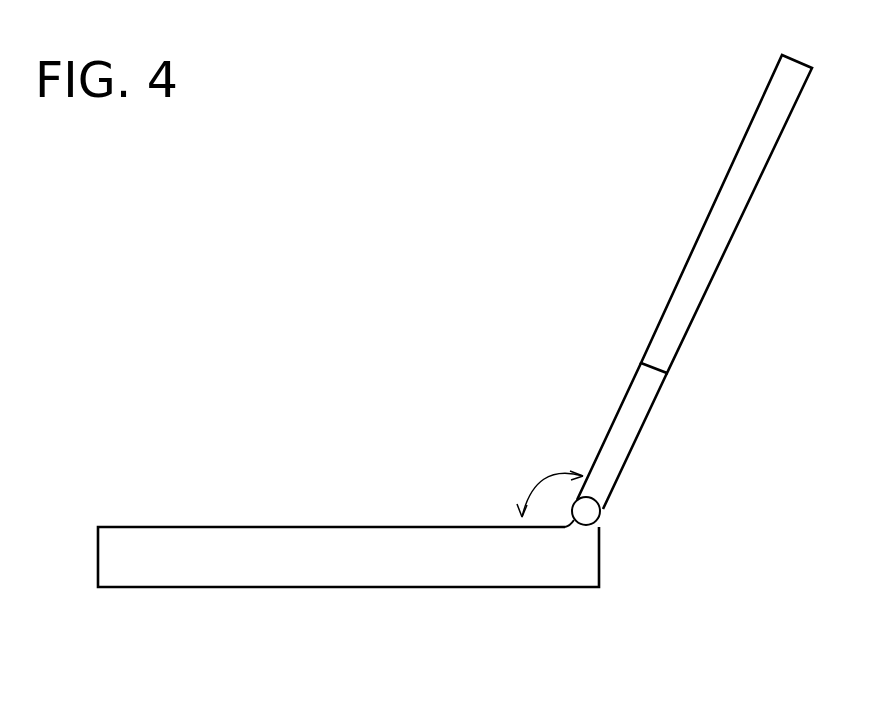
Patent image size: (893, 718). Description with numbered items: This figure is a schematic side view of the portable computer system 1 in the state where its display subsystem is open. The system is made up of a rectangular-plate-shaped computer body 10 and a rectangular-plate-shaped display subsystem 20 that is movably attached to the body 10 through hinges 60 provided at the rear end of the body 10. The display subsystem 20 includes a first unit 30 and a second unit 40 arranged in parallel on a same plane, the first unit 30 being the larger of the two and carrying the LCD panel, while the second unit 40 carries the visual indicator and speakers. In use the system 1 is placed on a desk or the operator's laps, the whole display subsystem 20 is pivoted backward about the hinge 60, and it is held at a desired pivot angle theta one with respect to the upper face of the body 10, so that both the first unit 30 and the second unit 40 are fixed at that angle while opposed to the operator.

The portable computer system 1 is at (130, 447).
The computer body 10 is at (338, 570).
The display subsystem 20 is at (688, 30).
The first unit 30 is at (706, 232).
The second unit 40 is at (613, 442).
The hinge 60 is at (602, 506).